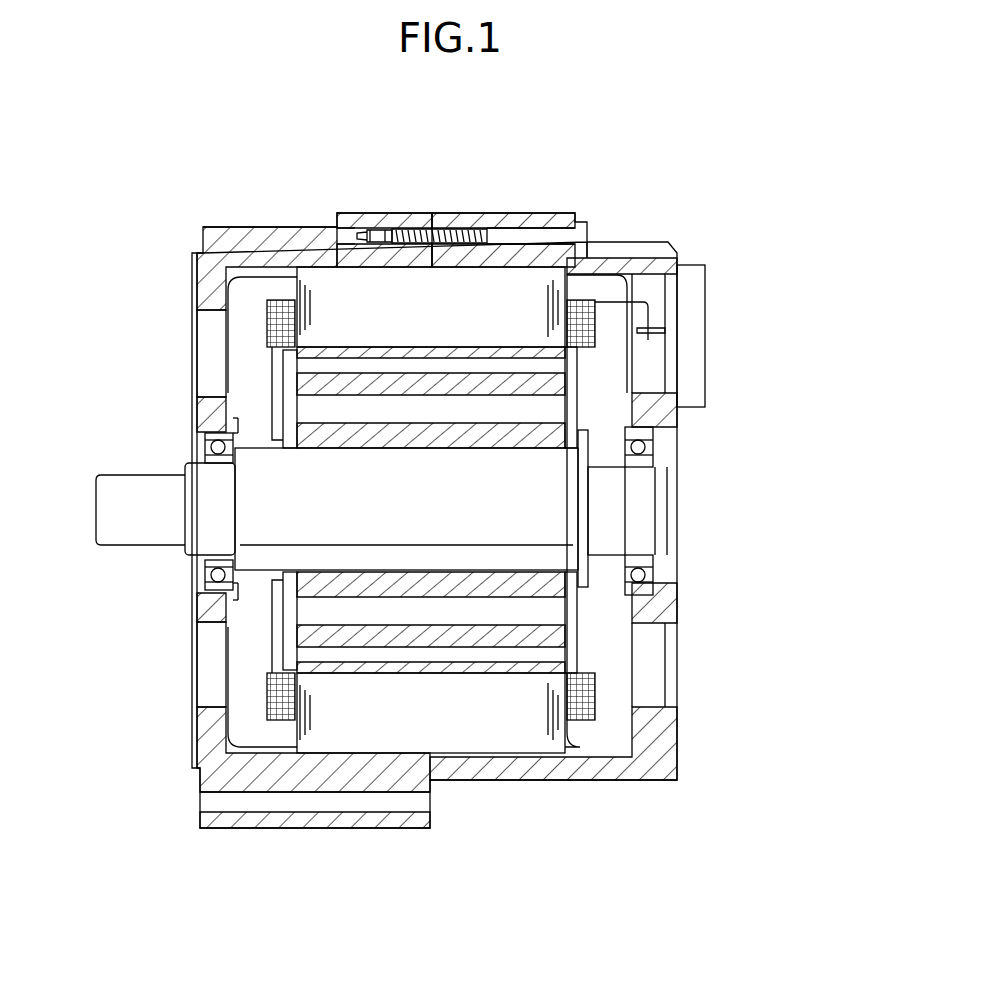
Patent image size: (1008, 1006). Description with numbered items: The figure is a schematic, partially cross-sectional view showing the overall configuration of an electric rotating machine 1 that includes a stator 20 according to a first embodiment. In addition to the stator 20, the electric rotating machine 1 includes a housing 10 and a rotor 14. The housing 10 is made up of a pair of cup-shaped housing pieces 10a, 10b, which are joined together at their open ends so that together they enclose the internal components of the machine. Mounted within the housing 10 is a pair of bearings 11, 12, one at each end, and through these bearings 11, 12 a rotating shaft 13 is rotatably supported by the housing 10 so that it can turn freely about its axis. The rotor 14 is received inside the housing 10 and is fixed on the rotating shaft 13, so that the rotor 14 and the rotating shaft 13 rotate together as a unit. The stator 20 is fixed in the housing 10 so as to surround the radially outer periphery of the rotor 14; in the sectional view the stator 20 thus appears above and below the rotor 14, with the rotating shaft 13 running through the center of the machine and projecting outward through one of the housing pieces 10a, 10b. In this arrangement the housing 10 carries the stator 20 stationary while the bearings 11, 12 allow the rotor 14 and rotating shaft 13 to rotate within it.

The electric rotating machine 1 is at (757, 158).
The housing 10 is at (487, 90).
The cup-shaped housing piece 10a is at (350, 223).
The cup-shaped housing piece 10b is at (452, 222).
The bearing 11 is at (213, 435).
The bearing 12 is at (646, 450).
The rotating shaft 13 is at (143, 528).
The rotor 14 is at (553, 382).
The stator 20 is at (540, 300).